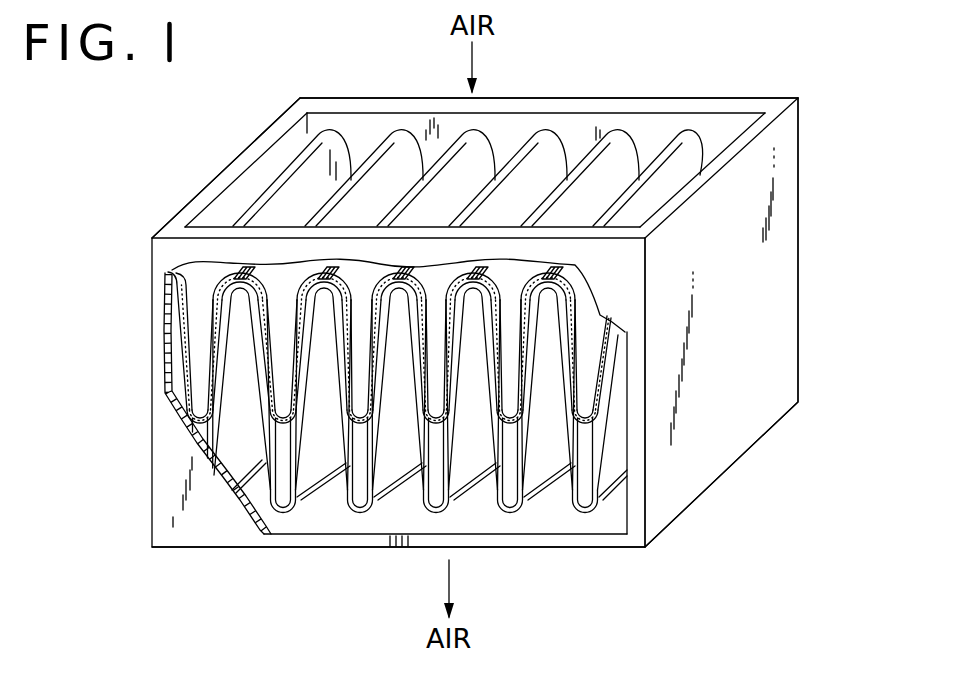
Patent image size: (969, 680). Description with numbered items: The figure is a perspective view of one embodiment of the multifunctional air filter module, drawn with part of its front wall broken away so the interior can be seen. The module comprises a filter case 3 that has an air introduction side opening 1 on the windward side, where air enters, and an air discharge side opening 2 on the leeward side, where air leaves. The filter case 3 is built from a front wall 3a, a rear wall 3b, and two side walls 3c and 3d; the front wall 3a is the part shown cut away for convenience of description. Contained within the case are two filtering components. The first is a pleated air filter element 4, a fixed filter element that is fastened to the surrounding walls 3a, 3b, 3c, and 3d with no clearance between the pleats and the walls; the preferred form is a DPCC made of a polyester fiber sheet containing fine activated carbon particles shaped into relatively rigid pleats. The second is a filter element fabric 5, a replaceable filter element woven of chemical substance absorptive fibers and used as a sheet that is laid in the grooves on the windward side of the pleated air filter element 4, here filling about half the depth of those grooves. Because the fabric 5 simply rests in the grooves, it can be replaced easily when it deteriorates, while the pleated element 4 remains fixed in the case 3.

The air introduction side opening 1 is at (623, 125).
The air discharge side opening 2 is at (326, 502).
The filter case 3 is at (516, 328).
The front wall 3a is at (180, 520).
The rear wall 3b is at (543, 107).
The side wall 3c is at (760, 288).
The side wall 3d is at (208, 195).
The pleated air filter element 4 is at (617, 462).
The filter element fabric 5 is at (186, 336).